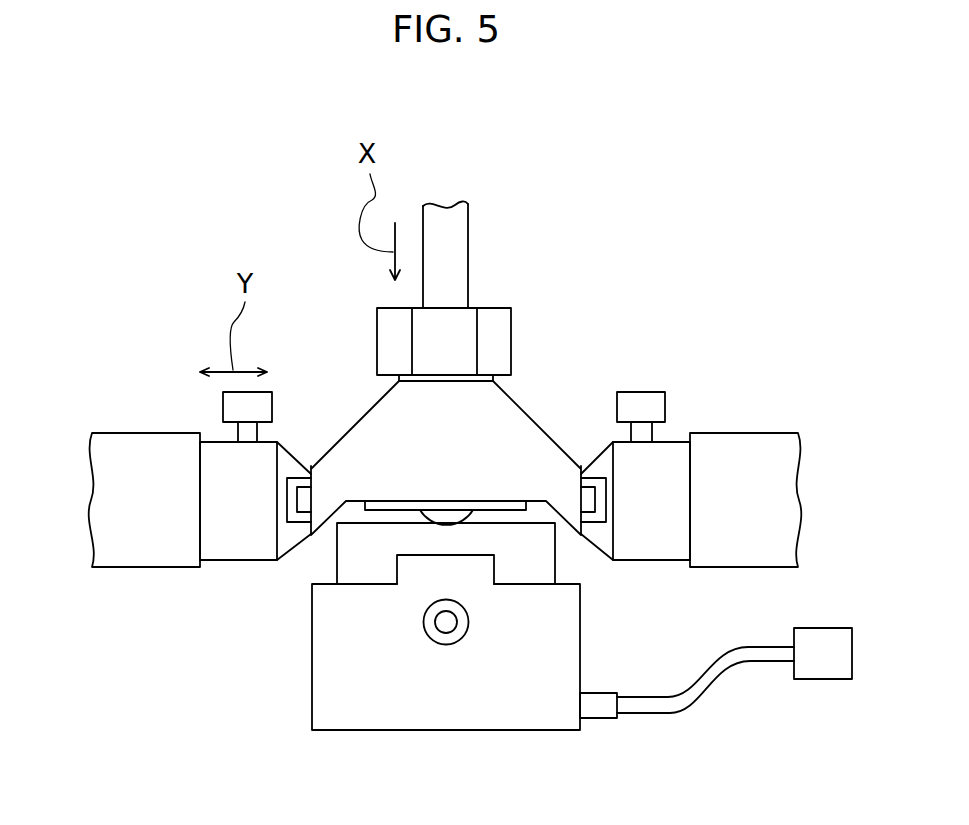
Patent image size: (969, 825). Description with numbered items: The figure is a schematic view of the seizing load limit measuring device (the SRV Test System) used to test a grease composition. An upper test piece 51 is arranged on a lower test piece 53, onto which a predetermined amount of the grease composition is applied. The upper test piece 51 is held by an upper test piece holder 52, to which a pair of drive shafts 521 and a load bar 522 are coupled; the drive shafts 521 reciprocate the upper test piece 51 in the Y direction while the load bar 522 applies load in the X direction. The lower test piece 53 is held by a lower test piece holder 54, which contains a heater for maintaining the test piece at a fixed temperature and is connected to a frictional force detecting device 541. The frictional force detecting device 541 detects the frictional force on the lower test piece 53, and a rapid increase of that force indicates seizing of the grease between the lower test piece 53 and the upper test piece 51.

The upper test piece 51 is at (452, 517).
The upper test piece holder 52 is at (333, 403).
The drive shafts 521 is at (152, 410).
The load bar 522 is at (482, 245).
The lower test piece 53 is at (355, 550).
The lower test piece holder 54 is at (293, 663).
The frictional force detecting device 541 is at (825, 668).